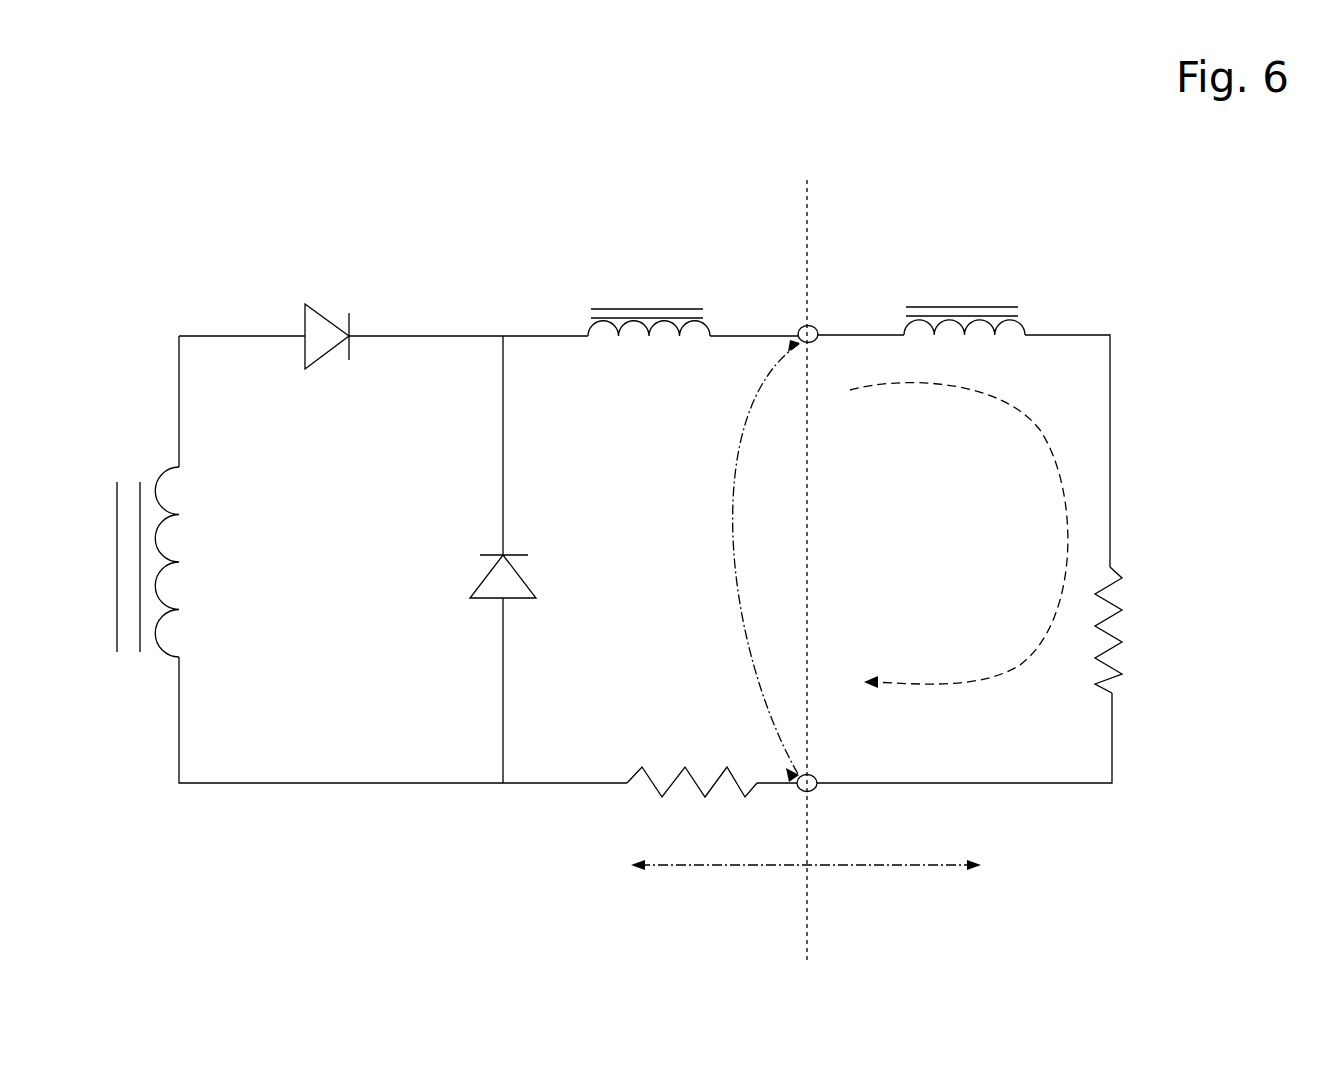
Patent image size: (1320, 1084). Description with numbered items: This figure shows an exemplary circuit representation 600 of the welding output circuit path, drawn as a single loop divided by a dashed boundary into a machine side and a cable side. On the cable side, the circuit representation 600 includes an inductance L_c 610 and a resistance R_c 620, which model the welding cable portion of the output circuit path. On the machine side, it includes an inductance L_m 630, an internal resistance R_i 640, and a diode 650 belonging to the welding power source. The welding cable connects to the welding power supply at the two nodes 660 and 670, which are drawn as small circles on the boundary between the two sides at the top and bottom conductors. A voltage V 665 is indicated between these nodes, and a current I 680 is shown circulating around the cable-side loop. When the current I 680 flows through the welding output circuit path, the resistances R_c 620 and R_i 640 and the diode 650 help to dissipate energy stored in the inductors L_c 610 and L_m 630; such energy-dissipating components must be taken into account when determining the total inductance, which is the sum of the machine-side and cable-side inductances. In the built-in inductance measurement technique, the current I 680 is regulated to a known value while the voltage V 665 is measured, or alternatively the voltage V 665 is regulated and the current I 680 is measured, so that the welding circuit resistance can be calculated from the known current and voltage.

The circuit representation 600 is at (222, 150).
The inductance L_c 610 is at (1025, 335).
The resistance R_c 620 is at (1119, 572).
The inductance L_m 630 is at (650, 337).
The internal resistance R_i 640 is at (636, 778).
The diode D_1 650 is at (482, 599).
The node 660 is at (812, 792).
The voltage V 665 is at (742, 550).
The node 670 is at (813, 327).
The current I 680 is at (1033, 437).